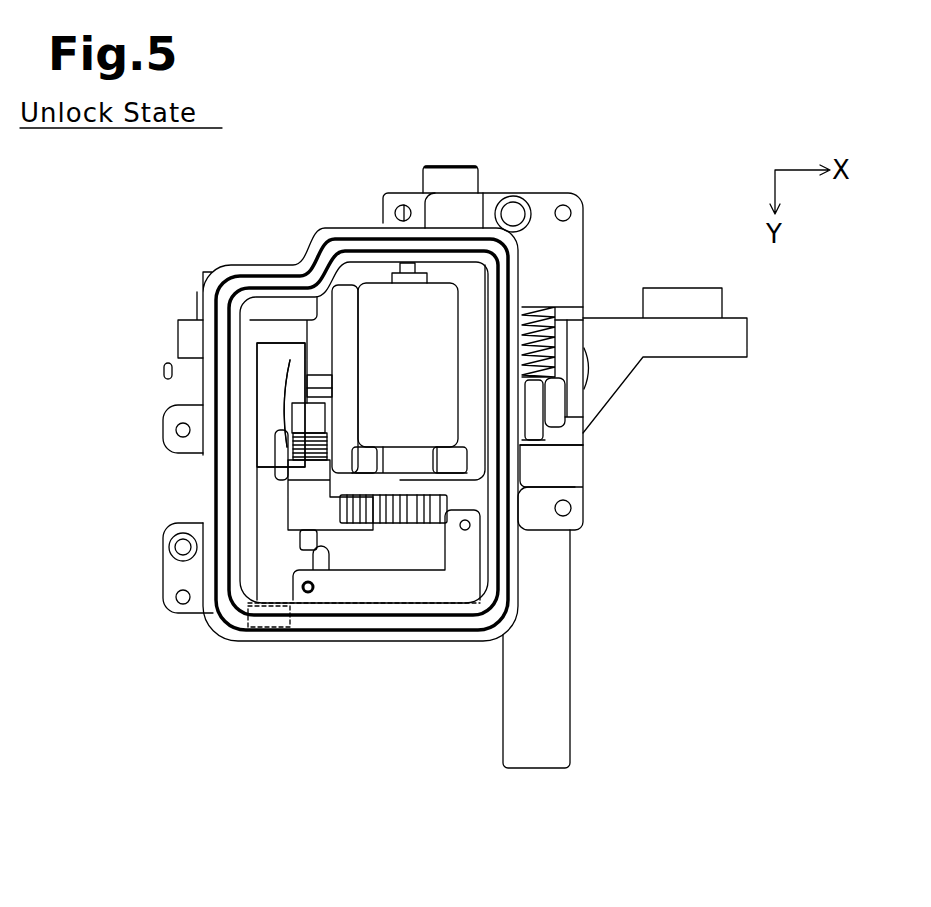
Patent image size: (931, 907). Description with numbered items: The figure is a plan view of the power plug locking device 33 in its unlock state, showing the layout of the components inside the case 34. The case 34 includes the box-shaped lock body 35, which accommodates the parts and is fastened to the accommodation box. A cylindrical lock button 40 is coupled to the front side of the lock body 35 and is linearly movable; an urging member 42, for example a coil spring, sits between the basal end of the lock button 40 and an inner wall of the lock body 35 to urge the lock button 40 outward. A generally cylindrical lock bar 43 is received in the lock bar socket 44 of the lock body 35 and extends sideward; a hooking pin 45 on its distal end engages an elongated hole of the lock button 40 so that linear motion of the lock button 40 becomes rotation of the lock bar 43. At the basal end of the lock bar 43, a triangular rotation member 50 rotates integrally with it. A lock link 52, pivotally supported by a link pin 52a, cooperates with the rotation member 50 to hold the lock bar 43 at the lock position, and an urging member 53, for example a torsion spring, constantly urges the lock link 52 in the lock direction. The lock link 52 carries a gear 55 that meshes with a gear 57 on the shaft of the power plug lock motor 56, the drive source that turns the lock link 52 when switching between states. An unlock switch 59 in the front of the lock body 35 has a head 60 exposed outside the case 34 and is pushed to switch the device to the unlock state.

The power plug locking device 33 is at (225, 188).
The case 34 is at (360, 434).
The lock body 35 is at (215, 620).
The lock button 40 is at (568, 720).
The urging member 42 is at (555, 320).
The lock bar 43 is at (575, 394).
The lock bar socket 44 is at (568, 334).
The hooking pin 45 is at (543, 436).
The rotation member 50 is at (267, 368).
The lock link 52 is at (285, 508).
The link pin 52a is at (322, 390).
The urging member 53 is at (327, 447).
The gear 55 is at (363, 520).
The power plug lock motor 56 is at (374, 298).
The gear 57 is at (413, 513).
The unlock switch 59 is at (273, 630).
The head 60 is at (283, 630).